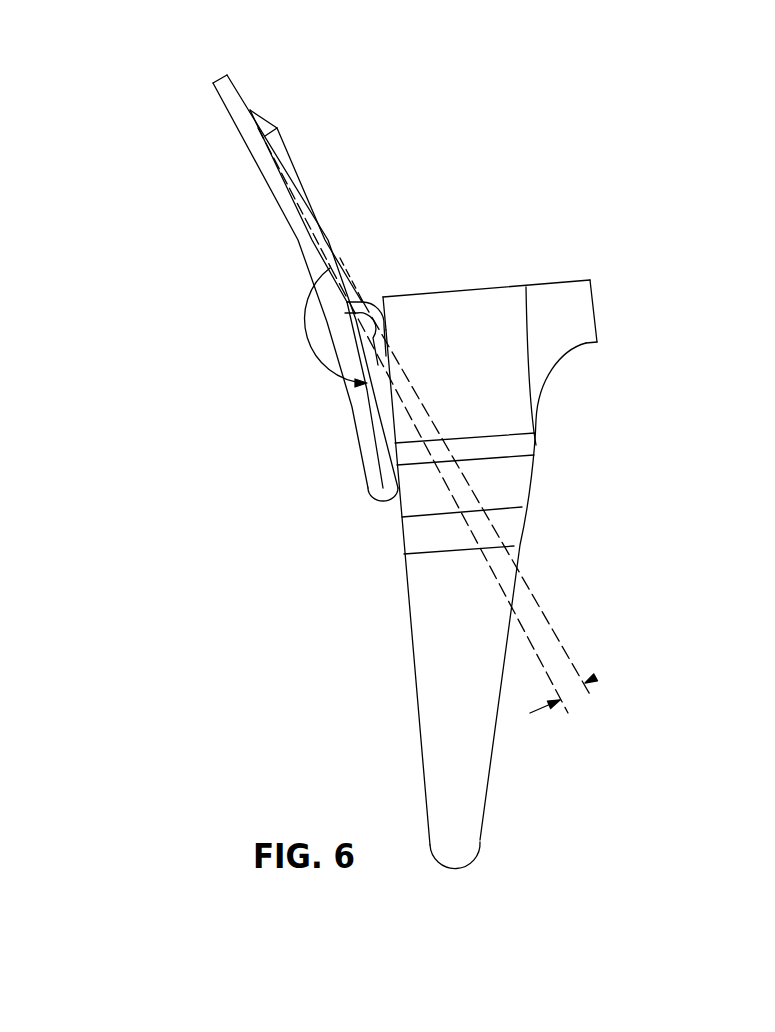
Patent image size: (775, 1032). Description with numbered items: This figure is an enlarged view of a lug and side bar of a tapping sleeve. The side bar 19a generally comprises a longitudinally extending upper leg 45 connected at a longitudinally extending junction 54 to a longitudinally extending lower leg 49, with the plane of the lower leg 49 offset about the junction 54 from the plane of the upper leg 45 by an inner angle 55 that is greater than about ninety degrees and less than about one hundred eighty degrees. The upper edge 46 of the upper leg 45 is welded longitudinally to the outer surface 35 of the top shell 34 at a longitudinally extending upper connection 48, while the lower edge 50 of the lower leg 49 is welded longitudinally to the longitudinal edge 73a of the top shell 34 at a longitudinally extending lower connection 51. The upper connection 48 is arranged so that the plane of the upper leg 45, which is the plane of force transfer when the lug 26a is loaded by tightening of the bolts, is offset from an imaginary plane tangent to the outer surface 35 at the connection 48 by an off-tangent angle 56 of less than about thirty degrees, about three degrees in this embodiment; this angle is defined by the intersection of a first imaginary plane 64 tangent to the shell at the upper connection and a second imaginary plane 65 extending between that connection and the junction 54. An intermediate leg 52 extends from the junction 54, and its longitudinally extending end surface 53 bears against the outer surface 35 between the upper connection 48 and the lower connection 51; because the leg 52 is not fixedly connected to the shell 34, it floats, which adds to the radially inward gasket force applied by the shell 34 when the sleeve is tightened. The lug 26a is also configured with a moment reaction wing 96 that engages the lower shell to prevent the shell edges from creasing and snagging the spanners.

The side bar 19a is at (443, 125).
The lug 26a is at (594, 288).
The top shell 34 is at (323, 282).
The outer surface 35 is at (323, 270).
The upper leg 45 is at (328, 236).
The upper edge 46 is at (278, 140).
The upper connection 48 is at (268, 128).
The lower leg 49 is at (387, 425).
The lower edge 50 is at (392, 482).
The lower connection 51 is at (398, 492).
The intermediate leg 52 is at (358, 306).
The end surface 53 is at (327, 305).
The junction 54 is at (386, 297).
The inner angle 55 is at (305, 340).
The off-tangent angle 56 is at (605, 685).
The first imaginary plane 64 is at (520, 613).
The second imaginary plane 65 is at (555, 633).
The longitudinal edge 73a is at (367, 482).
The moment reaction wing 96 is at (453, 813).